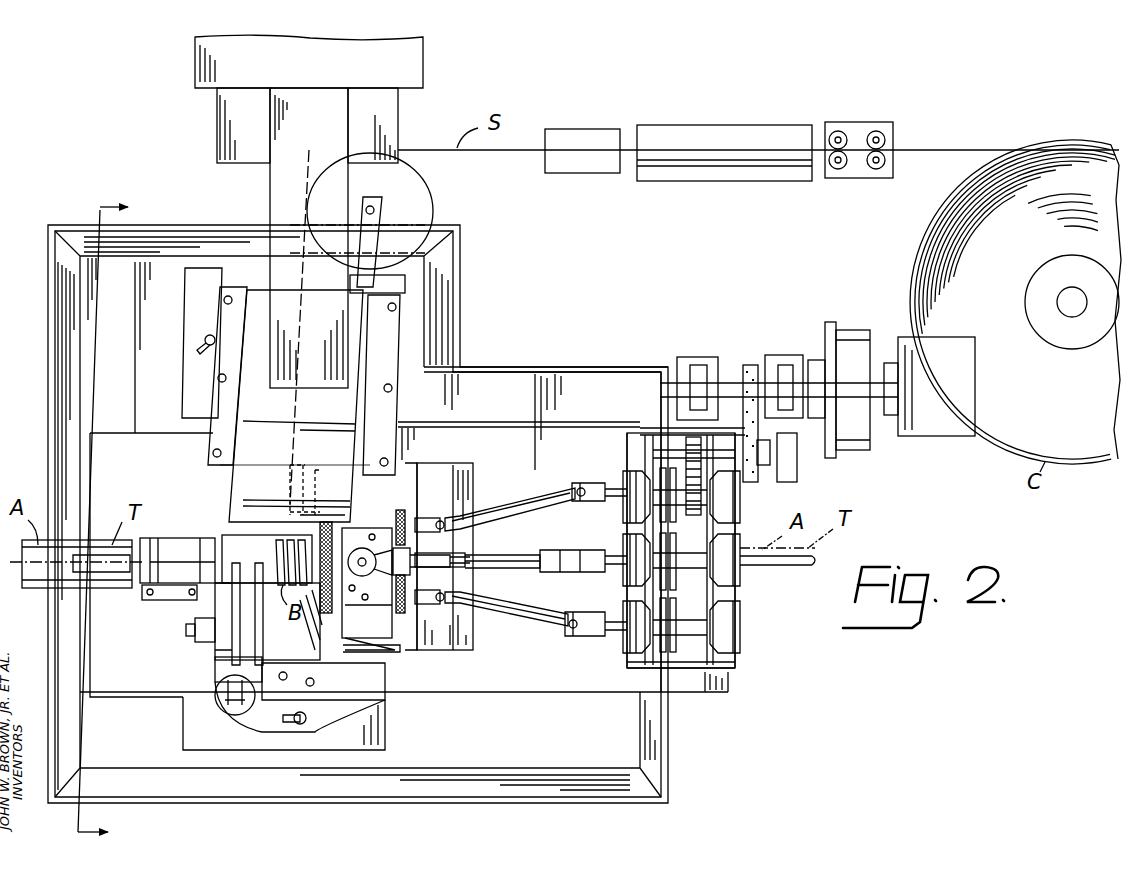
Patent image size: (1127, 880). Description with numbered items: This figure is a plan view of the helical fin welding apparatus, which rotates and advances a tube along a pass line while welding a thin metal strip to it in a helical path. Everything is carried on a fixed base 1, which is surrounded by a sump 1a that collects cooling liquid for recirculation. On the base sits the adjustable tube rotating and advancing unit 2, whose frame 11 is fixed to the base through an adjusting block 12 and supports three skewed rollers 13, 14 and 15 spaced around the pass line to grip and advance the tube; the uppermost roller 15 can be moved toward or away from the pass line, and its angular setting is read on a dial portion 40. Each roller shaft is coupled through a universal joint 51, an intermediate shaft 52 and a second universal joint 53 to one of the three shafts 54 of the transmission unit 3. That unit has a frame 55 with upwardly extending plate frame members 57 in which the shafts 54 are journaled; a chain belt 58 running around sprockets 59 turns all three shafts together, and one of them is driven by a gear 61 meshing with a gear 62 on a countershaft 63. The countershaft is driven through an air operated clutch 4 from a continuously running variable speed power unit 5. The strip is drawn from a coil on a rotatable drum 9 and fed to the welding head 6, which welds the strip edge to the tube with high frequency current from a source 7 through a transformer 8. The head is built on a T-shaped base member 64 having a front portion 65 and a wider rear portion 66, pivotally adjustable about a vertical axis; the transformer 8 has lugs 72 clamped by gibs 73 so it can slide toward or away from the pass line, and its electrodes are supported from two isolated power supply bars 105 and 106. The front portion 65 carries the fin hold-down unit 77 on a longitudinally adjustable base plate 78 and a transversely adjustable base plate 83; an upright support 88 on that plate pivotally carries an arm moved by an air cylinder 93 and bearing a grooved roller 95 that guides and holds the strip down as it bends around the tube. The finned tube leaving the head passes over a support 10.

The fixed base 1 is at (720, 697).
The sump 1a is at (670, 768).
The tube rotating and advancing unit 2 is at (415, 652).
The transmission unit 3 is at (770, 620).
The air operated clutch 4 is at (824, 347).
The variable speed power unit 5 is at (972, 440).
The welding head 6 is at (218, 494).
The welding current source 7 is at (213, 137).
The transformer 8 is at (368, 413).
The rotatable drum 9 is at (1070, 466).
The support 10 is at (68, 590).
The frame 11 is at (405, 652).
The adjusting block 12 is at (500, 655).
The roller 13 is at (440, 652).
The roller 14 is at (403, 520).
The uppermost roller 15 is at (440, 545).
The dial portion 40 is at (368, 589).
The universal joint 51 is at (442, 517).
The intermediate shaft 52 is at (522, 506).
The universal joint 53 is at (598, 485).
The transmission shaft 54 is at (618, 502).
The transmission frame 55 is at (718, 655).
The plate frame member 57 is at (720, 590).
The chain belt 58 is at (678, 588).
The sprocket 59 is at (675, 635).
The gear 61 is at (696, 515).
The gear 62 is at (690, 450).
The countershaft 63 is at (745, 470).
The base member 64 is at (322, 712).
The front portion 65 is at (228, 530).
The rear portion 66 is at (185, 375).
The lug 72 is at (225, 478).
The gib 73 is at (220, 402).
The fin hold-down unit 77 is at (193, 612).
The base plate 78 is at (388, 706).
The base plate 83 is at (320, 665).
The upright support 88 is at (220, 648).
The air cylinder 93 is at (220, 718).
The grooved roller 95 is at (262, 600).
The power supply bar 105 is at (322, 452).
The power supply bar 106 is at (293, 462).